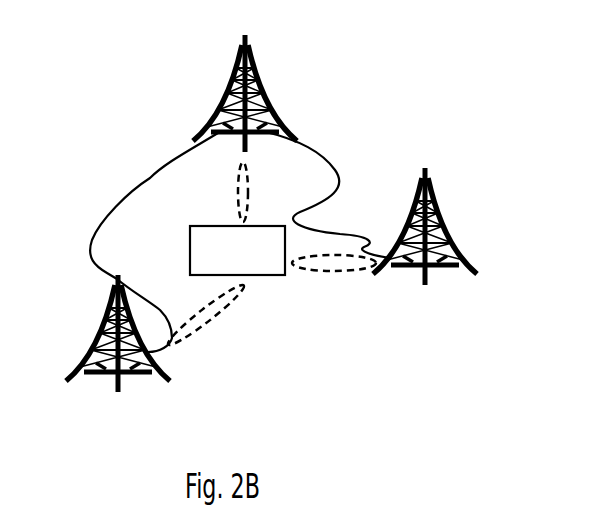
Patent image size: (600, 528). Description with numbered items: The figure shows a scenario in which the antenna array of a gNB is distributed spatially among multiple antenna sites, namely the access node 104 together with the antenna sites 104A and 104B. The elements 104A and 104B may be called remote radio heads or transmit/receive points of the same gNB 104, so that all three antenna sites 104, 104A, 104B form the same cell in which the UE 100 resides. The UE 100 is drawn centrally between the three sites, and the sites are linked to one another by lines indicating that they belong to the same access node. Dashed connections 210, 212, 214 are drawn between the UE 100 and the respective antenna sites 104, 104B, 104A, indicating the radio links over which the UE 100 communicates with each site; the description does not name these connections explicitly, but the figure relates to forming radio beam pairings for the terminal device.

The user device 100 is at (234, 263).
The access node 104 is at (240, 48).
The antenna site 104A is at (111, 287).
The antenna site 104B is at (420, 180).
The communication link 210 is at (238, 177).
The communication link 212 is at (330, 277).
The communication link 214 is at (213, 320).